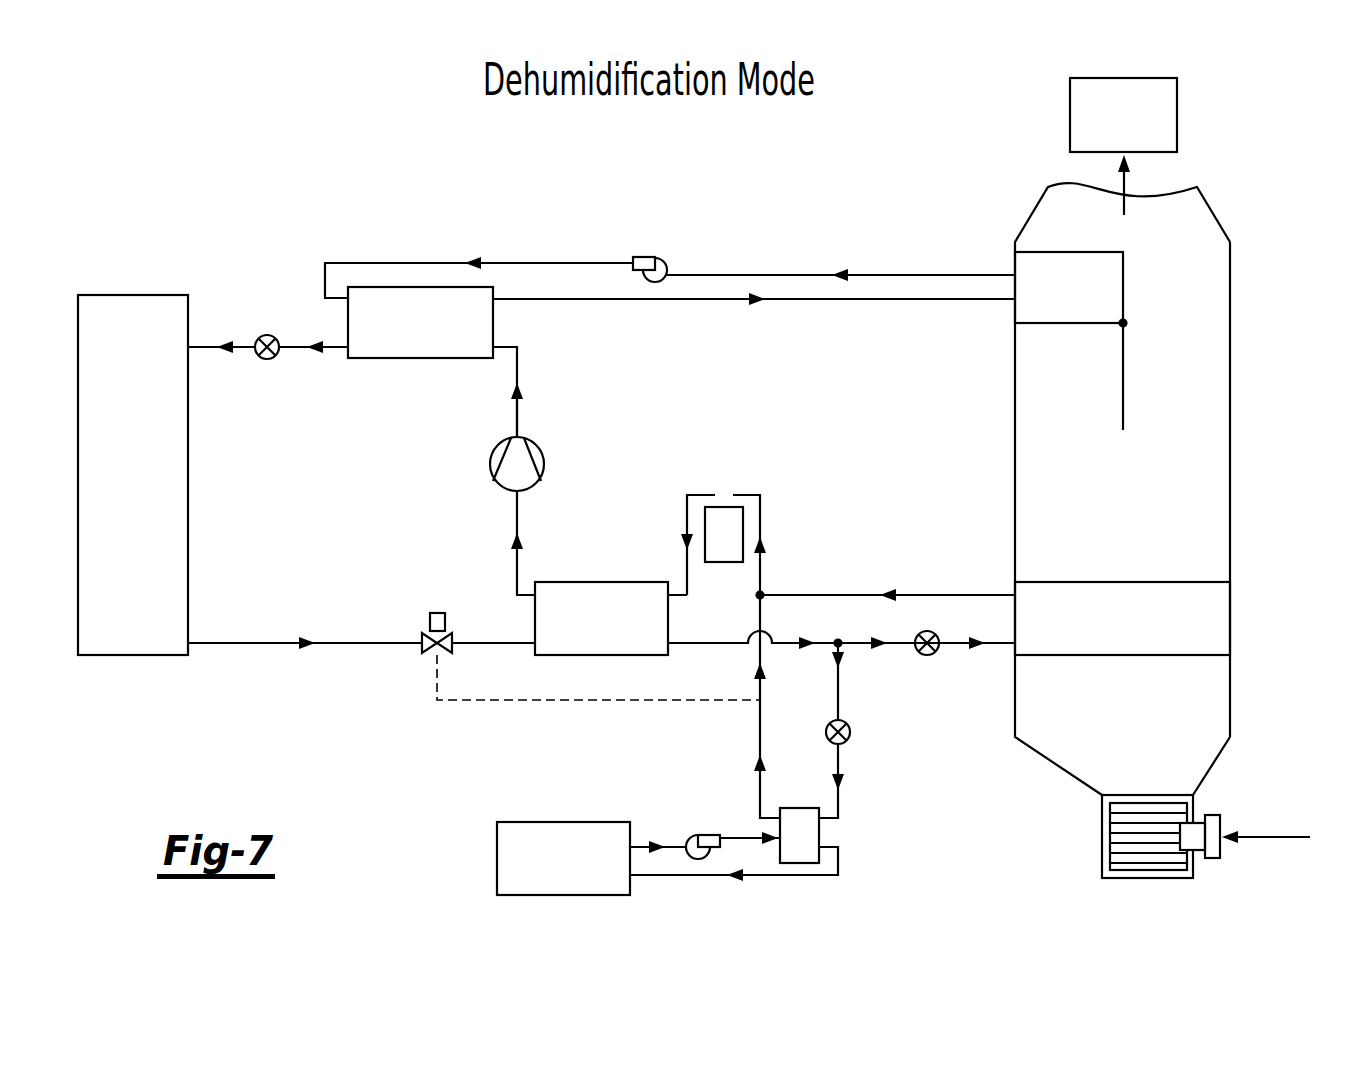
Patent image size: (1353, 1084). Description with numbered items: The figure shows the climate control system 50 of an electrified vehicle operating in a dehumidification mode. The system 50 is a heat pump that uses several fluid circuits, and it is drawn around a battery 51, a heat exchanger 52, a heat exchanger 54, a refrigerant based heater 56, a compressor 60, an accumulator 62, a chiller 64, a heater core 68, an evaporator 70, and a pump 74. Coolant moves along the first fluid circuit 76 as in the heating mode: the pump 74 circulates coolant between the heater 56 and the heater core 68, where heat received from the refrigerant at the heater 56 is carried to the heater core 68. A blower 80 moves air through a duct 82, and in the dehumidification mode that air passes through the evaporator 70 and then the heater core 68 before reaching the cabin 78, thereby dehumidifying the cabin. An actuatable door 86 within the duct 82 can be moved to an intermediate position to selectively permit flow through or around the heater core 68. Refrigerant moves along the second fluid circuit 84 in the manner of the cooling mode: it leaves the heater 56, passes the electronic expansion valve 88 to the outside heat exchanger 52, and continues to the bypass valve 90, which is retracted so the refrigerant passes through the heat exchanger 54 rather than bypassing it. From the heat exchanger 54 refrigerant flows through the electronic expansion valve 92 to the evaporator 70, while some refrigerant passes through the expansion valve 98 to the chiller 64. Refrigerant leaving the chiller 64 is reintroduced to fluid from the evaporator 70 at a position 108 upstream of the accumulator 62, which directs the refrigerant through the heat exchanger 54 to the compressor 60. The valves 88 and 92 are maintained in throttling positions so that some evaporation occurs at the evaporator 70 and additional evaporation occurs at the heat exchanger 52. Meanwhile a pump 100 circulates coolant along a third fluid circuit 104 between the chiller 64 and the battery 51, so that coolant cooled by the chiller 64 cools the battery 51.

The climate control system 50 is at (1252, 202).
The battery 51 is at (575, 886).
The heat exchanger 52 is at (148, 523).
The heat exchanger 54 is at (602, 582).
The heater 56 is at (420, 360).
The compressor 60 is at (489, 465).
The accumulator 62 is at (723, 500).
The chiller 64 is at (820, 836).
The heater core 68 is at (1123, 287).
The evaporator 70 is at (1122, 580).
The pump 74 is at (655, 257).
The first fluid circuit 76 is at (760, 273).
The cabin 78 is at (1138, 143).
The blower 80 is at (1204, 849).
The duct 82 is at (1230, 387).
The second fluid circuit 84 is at (517, 418).
The door 86 is at (1123, 378).
The electronic expansion valve 88 is at (267, 335).
The bypass valve 90 is at (437, 612).
The electronic expansion valve 92 is at (927, 631).
The expansion valve 98 is at (851, 731).
The pump 100 is at (702, 834).
The third fluid circuit 104 is at (675, 878).
The position 108 is at (762, 593).